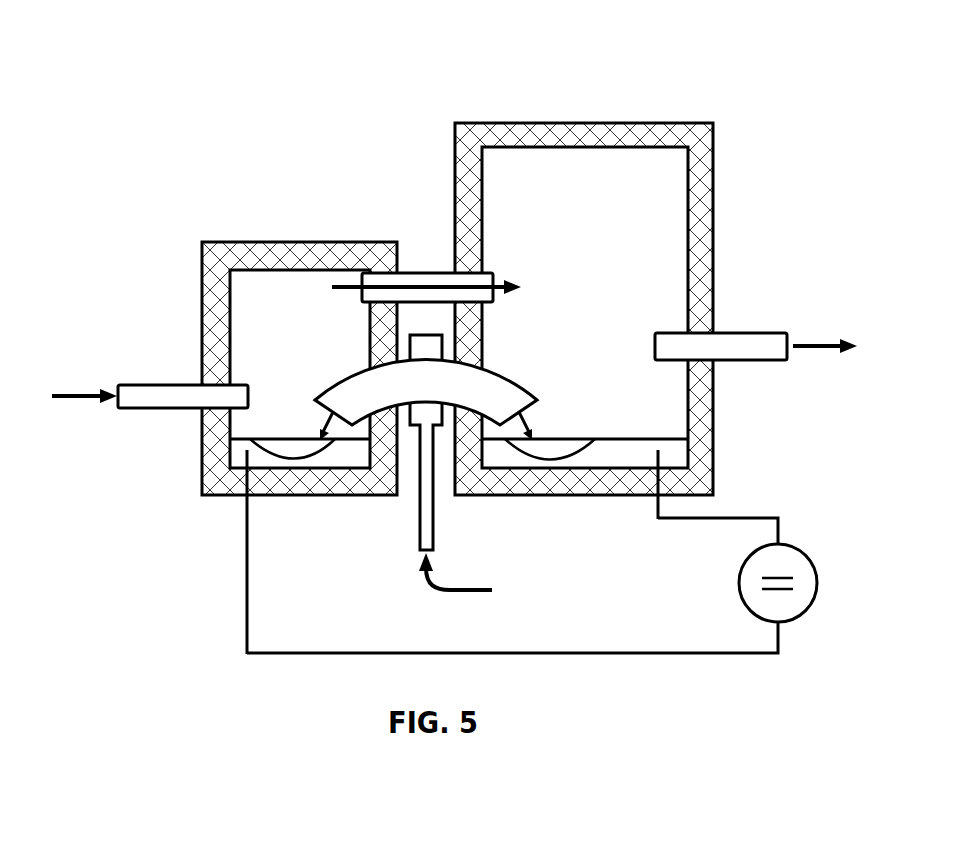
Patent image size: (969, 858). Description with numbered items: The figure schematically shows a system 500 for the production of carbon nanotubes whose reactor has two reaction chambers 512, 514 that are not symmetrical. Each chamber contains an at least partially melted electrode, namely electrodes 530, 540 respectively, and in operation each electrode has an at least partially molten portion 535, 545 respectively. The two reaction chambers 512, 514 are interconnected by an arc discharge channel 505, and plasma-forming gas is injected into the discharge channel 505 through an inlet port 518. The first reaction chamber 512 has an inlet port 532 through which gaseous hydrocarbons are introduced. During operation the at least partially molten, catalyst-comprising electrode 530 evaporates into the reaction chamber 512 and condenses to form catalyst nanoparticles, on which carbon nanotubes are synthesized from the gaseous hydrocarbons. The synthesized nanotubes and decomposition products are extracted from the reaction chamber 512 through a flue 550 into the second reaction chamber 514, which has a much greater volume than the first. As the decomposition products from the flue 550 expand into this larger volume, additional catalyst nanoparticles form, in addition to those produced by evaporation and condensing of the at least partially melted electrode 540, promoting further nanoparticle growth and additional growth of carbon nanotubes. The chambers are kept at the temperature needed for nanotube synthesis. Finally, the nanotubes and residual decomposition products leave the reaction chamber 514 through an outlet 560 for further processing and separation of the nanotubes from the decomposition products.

The system 500 is at (435, 332).
The reaction chamber 512 is at (253, 287).
The reaction chamber 514 is at (638, 208).
The inlet port 532 is at (183, 383).
The flue 550 is at (426, 220).
The outlet 560 is at (751, 333).
The electrode 530 is at (214, 464).
The electrode 540 is at (670, 448).
The at least partially molten portion 535 is at (297, 447).
The at least partially molten portion 545 is at (530, 493).
The inlet port 518 is at (418, 503).
The arc discharge channel 505 is at (505, 370).